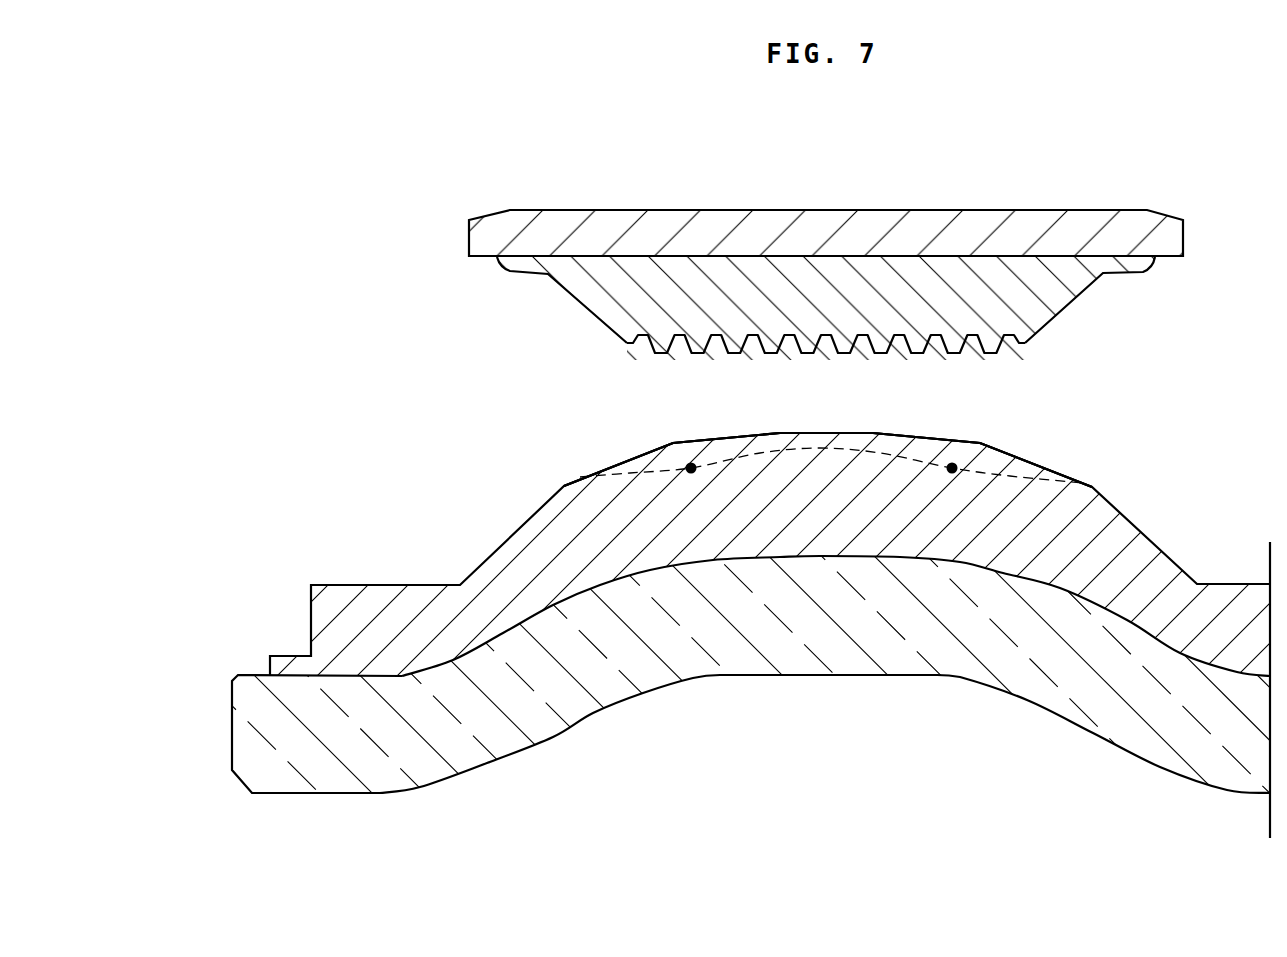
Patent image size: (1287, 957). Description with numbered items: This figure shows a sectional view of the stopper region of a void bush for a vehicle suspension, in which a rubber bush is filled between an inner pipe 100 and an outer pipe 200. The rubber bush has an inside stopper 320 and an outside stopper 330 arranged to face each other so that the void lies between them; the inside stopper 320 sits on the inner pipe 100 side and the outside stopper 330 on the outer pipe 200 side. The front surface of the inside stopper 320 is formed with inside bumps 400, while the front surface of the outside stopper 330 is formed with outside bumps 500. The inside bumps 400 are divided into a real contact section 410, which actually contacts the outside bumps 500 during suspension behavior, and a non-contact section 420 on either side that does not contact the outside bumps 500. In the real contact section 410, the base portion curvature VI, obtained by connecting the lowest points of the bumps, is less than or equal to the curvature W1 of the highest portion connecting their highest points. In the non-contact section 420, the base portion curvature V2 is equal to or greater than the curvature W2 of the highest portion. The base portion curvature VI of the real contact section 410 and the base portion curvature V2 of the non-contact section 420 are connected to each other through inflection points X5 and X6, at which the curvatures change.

The inner pipe 100 is at (333, 795).
The outer pipe 200 is at (975, 222).
The inside stopper 320 is at (770, 525).
The outside stopper 330 is at (729, 277).
The inside bumps 400 is at (905, 443).
The real contact section 410 is at (673, 407).
The non-contact section 420 is at (1092, 483).
The outside bumps 500 is at (997, 342).
The curvature of highest portion of real contact section W1 is at (820, 433).
The curvature of highest portion of non-contact section W2 is at (602, 470).
The base portion curvature of non-contact section V2 is at (630, 472).
The base portion curvature of real contact section VI is at (847, 450).
The inflection point X5 is at (691, 468).
The inflection point X6 is at (952, 468).